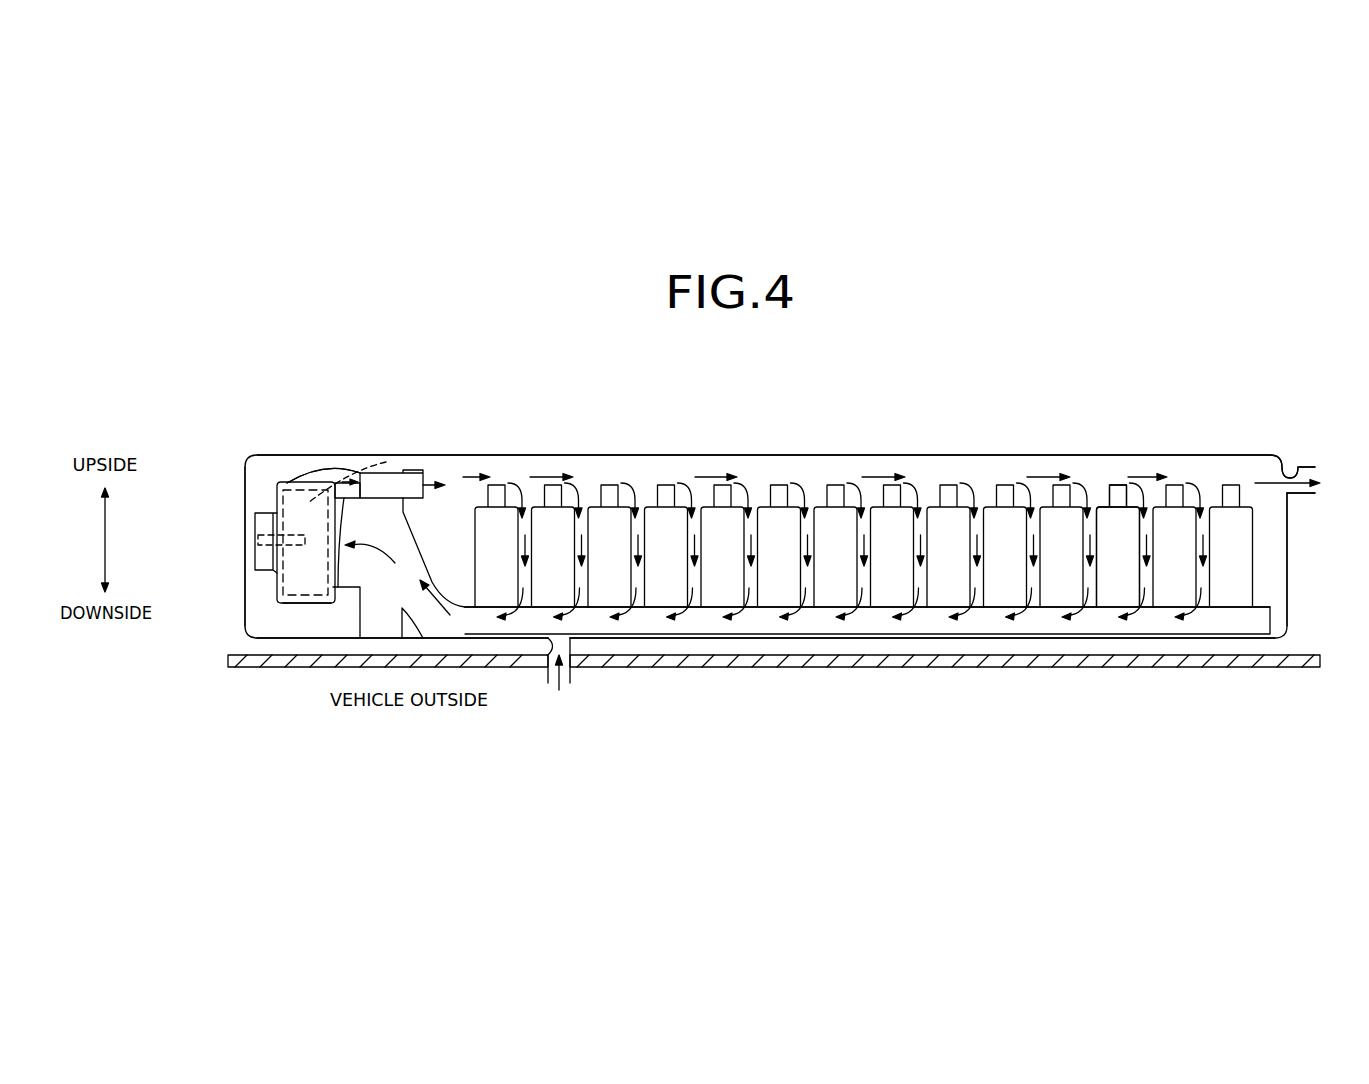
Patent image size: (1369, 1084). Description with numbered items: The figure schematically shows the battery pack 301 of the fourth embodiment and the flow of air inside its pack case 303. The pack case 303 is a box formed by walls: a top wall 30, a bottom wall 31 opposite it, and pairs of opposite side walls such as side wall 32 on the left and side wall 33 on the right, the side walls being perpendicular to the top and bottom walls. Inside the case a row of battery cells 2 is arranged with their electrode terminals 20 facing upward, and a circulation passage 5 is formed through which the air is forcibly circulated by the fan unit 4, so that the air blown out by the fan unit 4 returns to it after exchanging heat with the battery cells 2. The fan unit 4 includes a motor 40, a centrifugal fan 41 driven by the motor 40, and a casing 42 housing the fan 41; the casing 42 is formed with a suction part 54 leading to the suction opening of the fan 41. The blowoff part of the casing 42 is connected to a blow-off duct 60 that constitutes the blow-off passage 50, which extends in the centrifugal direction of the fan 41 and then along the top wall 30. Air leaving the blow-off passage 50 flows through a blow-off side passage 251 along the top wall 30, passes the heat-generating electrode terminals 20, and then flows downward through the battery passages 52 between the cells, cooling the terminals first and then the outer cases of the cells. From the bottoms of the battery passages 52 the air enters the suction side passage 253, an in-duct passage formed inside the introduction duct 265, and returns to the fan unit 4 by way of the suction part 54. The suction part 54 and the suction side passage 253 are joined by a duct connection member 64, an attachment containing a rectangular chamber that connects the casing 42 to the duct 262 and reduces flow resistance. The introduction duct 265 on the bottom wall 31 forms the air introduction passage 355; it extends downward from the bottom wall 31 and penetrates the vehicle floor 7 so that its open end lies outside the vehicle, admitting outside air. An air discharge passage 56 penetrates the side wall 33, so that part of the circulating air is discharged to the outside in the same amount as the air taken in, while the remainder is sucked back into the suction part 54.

The battery cells 2 is at (1245, 505).
The fan unit 4 is at (302, 468).
The circulation passage 5 is at (432, 466).
The floor 7 is at (1152, 668).
The electrode terminals 20 is at (1117, 488).
The top wall 30 is at (881, 455).
The bottom wall 31 is at (815, 640).
The side wall 32 is at (245, 577).
The side wall 33 is at (1290, 527).
The motor 40 is at (266, 472).
The fan 41 is at (277, 590).
The casing 42 is at (294, 604).
The blow-off passage 50 is at (386, 462).
The battery passages 52 is at (750, 608).
The suction part 54 is at (338, 470).
The air discharge passage 56 is at (1296, 468).
The blow-off duct 60 is at (416, 468).
The duct connection member 64 is at (372, 470).
The blow-off side passage 251 is at (818, 476).
The suction side passage 253 is at (919, 627).
The duct 262 is at (1270, 618).
The introduction duct 265 is at (570, 680).
The battery pack 301 is at (1056, 440).
The pack case 303 is at (245, 612).
The air introduction passage 355 is at (545, 657).